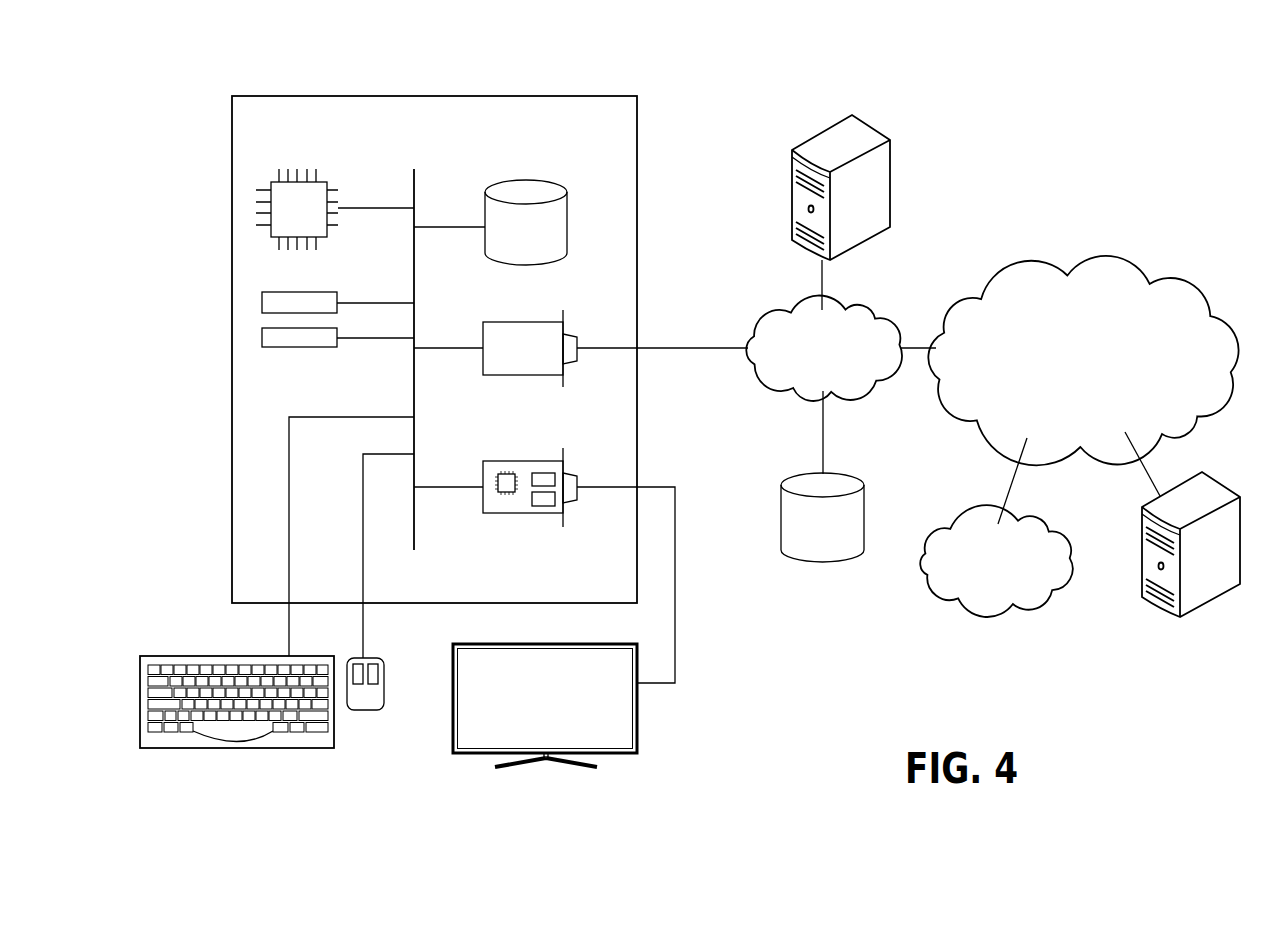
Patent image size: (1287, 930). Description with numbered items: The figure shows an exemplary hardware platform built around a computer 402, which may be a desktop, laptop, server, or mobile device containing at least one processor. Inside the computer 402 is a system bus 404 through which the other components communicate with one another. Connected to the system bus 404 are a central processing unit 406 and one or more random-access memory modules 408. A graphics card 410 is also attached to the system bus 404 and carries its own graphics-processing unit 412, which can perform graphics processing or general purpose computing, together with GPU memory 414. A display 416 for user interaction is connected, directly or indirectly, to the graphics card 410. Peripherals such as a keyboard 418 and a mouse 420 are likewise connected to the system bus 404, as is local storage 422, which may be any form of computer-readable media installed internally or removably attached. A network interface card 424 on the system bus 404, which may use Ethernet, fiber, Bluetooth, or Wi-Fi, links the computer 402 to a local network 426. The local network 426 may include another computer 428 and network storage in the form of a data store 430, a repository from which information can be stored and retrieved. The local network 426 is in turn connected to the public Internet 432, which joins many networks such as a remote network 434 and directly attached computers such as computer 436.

The computer 402 is at (594, 95).
The system bus 404 is at (415, 180).
The central processing unit 406 is at (320, 178).
The random-access memory modules 408 is at (337, 337).
The graphics card 410 is at (506, 489).
The graphics-processing unit 412 is at (505, 489).
The GPU memory 414 is at (545, 504).
The display 416 is at (637, 735).
The keyboard 418 is at (240, 748).
The mouse 420 is at (361, 712).
The local storage 422 is at (568, 212).
The network interface card 424 is at (483, 332).
The local network 426 is at (875, 308).
The computer 428 is at (877, 123).
The data store 430 is at (857, 476).
The public Internet 432 is at (1126, 275).
The remote network 434 is at (1052, 520).
The computer 436 is at (1218, 476).